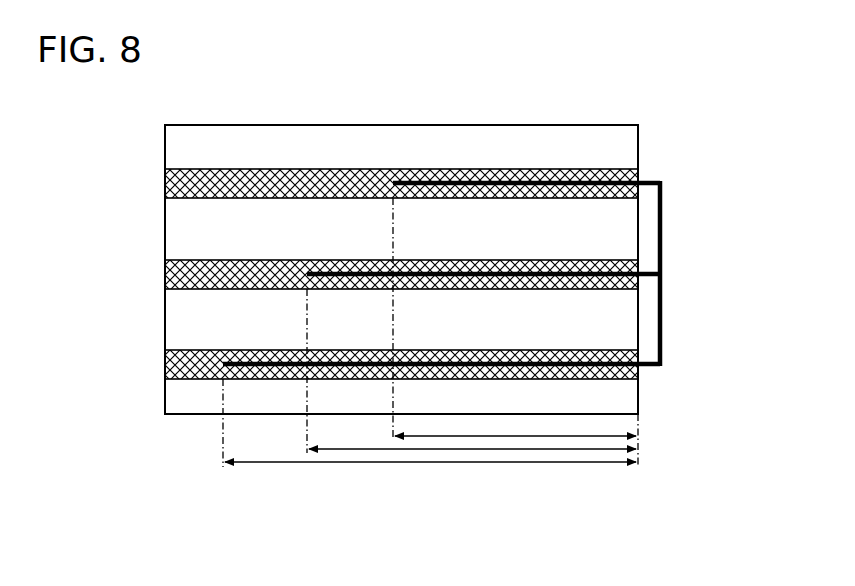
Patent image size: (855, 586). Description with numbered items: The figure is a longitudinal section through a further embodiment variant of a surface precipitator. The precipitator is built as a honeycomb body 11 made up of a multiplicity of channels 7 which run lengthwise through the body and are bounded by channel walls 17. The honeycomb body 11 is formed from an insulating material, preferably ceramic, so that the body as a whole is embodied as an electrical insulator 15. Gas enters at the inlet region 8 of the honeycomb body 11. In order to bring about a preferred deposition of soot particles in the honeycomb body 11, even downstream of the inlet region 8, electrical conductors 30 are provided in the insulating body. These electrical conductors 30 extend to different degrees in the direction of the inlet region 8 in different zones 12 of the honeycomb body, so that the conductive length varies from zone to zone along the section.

The inlet region 8 is at (140, 270).
The channels 7 is at (623, 233).
The channel walls 17 is at (640, 278).
The electrical insulator 15 is at (165, 367).
The electrical conductors 30 is at (660, 180).
The honeycomb body 11 is at (640, 414).
The zones 12 is at (262, 463).